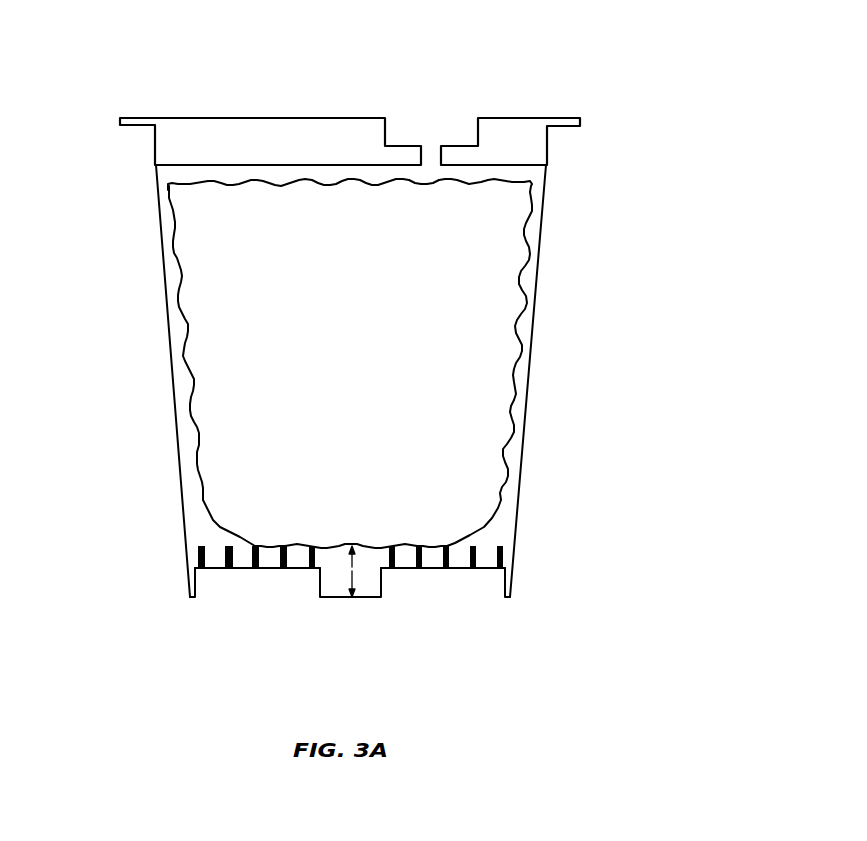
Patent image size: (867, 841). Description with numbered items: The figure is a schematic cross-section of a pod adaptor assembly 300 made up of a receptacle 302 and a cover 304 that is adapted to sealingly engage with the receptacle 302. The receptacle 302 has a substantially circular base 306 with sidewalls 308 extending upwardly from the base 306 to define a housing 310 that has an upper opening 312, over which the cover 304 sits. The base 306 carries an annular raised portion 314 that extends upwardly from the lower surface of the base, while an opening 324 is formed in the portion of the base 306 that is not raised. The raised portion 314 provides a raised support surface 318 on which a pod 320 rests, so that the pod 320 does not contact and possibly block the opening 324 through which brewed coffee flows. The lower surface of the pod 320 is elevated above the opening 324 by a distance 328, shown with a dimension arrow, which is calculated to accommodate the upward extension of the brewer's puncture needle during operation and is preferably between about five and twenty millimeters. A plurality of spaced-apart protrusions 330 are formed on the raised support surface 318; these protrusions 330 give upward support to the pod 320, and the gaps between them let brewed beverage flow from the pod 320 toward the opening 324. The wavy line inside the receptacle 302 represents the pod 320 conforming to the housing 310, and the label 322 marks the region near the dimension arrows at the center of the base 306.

The pod adaptor assembly 300 is at (632, 207).
The receptacle 302 is at (170, 310).
The cover 304 is at (166, 133).
The base 306 is at (193, 598).
The sidewalls 308 is at (520, 342).
The housing 310 is at (167, 176).
The upper opening 312 is at (510, 175).
The annular raised portion 314 is at (259, 571).
The raised support surface 318 is at (240, 558).
The pod 320 is at (460, 470).
The rib height 322 is at (380, 592).
The opening 324 is at (364, 600).
The distance 328 is at (358, 578).
The protrusions 330 is at (508, 556).